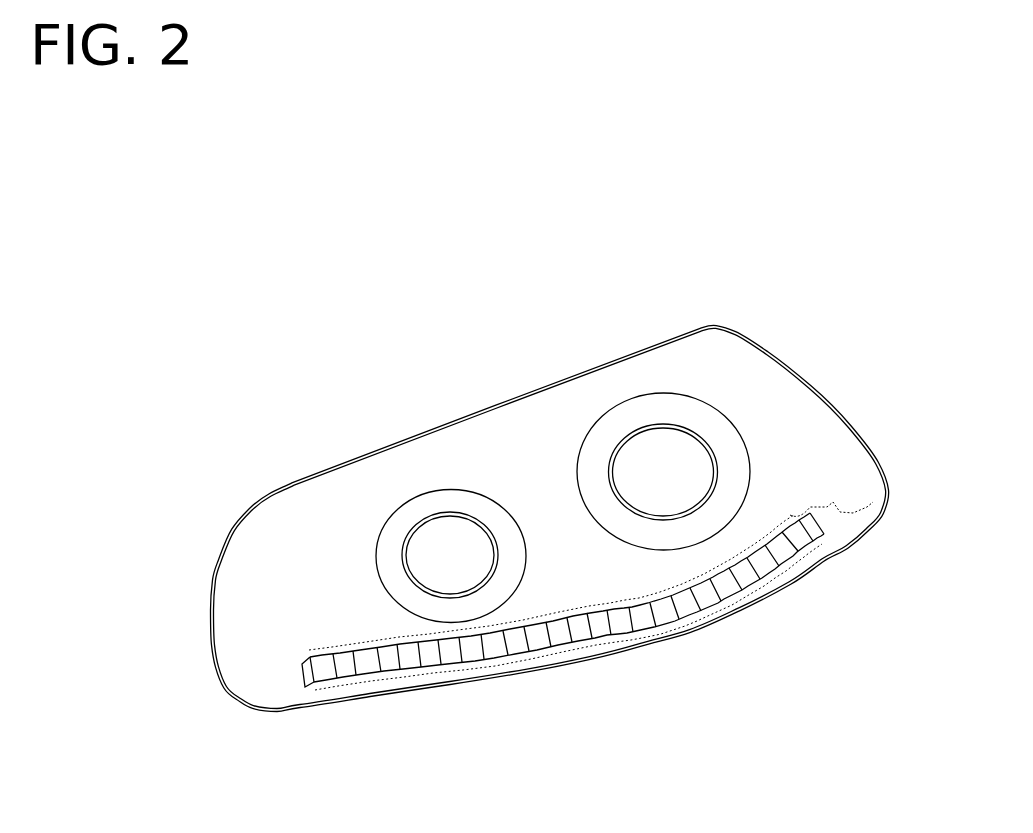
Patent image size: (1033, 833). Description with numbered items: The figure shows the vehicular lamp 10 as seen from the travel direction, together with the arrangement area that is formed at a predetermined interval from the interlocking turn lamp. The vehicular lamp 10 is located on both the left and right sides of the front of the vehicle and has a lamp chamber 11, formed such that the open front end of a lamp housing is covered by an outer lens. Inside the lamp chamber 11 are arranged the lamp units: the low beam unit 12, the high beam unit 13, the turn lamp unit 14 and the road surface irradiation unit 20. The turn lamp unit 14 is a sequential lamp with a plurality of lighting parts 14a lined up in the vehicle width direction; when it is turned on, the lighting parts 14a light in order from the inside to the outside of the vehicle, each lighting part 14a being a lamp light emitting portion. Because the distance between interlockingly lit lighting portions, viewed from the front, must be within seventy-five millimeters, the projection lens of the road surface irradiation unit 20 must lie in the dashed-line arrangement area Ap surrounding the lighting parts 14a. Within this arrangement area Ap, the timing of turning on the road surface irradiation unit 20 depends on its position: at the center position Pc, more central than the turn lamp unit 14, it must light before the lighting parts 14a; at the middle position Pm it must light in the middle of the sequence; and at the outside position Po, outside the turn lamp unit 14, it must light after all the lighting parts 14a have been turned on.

The vehicular lamp 10 is at (566, 515).
The lamp chamber 11 is at (282, 543).
The low beam unit 12 is at (445, 489).
The high beam unit 13 is at (643, 393).
The turn lamp unit 14 is at (683, 645).
The lighting parts 14a is at (567, 662).
The road surface irradiation unit 20 is at (873, 500).
The outside position Po is at (853, 535).
The center position Pc is at (308, 684).
The middle position Pm is at (615, 656).
The arrangement area Ap is at (340, 705).